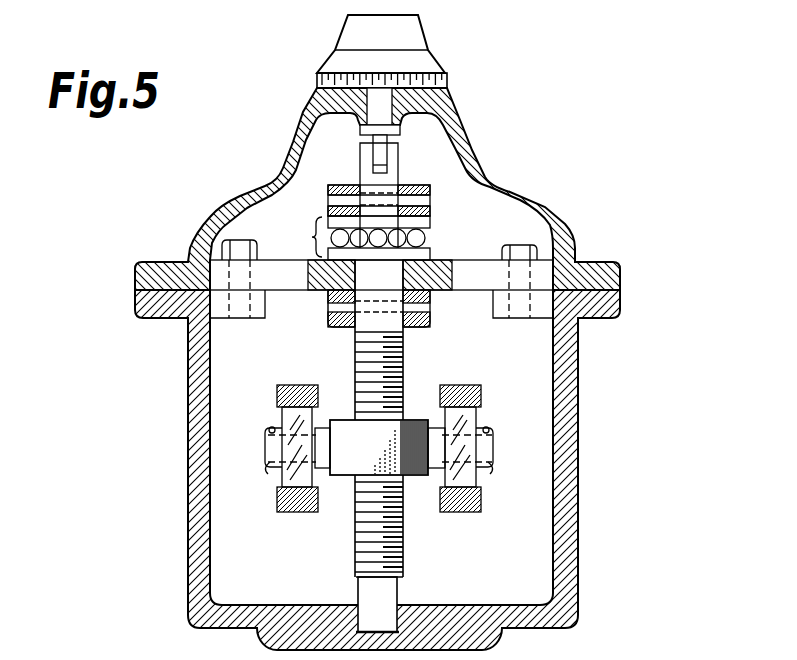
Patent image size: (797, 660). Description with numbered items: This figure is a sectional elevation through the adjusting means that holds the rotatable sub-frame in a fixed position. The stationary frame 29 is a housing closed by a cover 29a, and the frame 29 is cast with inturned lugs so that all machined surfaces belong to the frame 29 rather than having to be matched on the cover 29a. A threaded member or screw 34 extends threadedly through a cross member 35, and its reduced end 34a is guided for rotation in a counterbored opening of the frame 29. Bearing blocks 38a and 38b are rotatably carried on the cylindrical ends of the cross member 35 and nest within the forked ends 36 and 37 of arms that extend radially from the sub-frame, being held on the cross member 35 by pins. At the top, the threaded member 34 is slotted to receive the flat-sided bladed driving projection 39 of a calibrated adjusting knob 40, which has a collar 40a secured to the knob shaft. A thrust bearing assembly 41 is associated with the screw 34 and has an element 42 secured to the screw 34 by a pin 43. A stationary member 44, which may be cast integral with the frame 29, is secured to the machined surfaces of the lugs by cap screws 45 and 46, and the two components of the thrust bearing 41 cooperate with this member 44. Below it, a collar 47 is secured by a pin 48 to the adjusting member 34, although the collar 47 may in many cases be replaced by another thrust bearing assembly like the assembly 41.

The stationary frame 29 is at (578, 502).
The cover 29a is at (553, 208).
The threaded member or screw 34 is at (405, 345).
The reduced end 34a is at (430, 600).
The cross member 35 is at (420, 420).
The forked end 36 is at (282, 385).
The forked end 37 is at (467, 385).
The bearing block 38a is at (282, 417).
The bearing block 38b is at (480, 427).
The bladed driving projection 39 is at (378, 155).
The calibrated adjusting knob 40 is at (426, 38).
The collar 40a is at (396, 132).
The thrust bearing assembly 41 is at (313, 237).
The element 42 is at (400, 187).
The pin 43 is at (430, 200).
The stationary member 44 is at (463, 260).
The cap screw 45 is at (242, 240).
The cap screw 46 is at (518, 244).
The collar 47 is at (347, 327).
The pin 48 is at (328, 303).